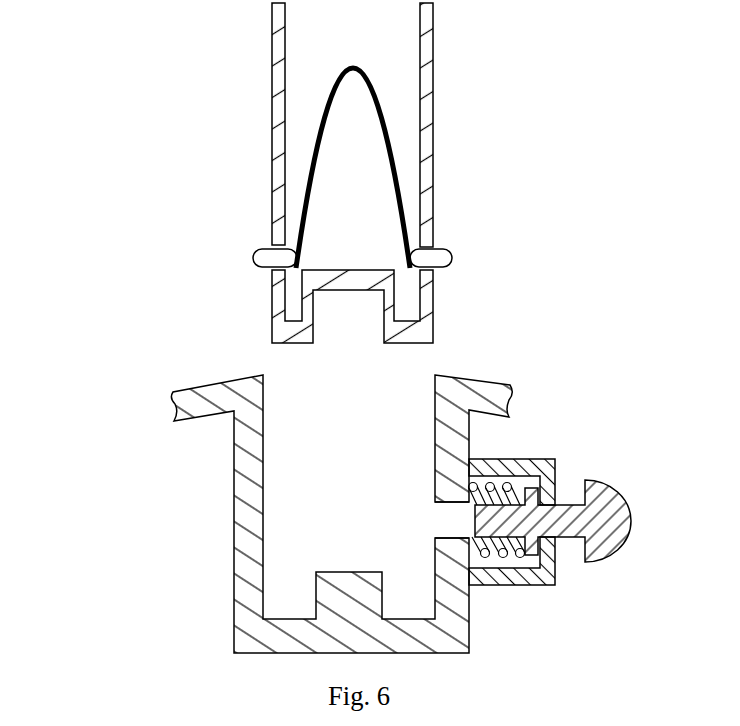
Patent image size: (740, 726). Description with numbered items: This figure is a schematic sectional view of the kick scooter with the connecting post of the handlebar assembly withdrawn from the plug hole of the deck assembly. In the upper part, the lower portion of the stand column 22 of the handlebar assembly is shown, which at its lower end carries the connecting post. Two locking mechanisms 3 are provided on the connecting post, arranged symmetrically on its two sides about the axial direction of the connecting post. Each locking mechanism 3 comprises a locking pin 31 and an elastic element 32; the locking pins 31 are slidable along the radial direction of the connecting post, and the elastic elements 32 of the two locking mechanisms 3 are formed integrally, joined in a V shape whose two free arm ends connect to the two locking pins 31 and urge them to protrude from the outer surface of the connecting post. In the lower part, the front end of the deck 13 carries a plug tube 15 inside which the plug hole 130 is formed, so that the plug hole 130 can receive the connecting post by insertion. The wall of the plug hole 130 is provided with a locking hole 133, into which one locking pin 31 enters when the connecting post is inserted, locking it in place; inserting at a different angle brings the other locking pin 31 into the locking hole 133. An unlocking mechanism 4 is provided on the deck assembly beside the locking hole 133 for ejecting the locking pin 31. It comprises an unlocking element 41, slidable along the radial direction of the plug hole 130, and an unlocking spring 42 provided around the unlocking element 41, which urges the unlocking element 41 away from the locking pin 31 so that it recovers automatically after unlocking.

The stand column 22 is at (433, 109).
The locking mechanism 3 is at (348, 168).
The elastic element 32 is at (308, 190).
The locking pin 31 is at (265, 258).
The deck 13 is at (359, 514).
The plug tube 15 is at (240, 580).
The plug hole 130 is at (435, 460).
The locking hole 133 is at (448, 523).
The unlocking mechanism 4 is at (575, 489).
The unlocking spring 42 is at (505, 487).
The unlocking element 41 is at (568, 507).